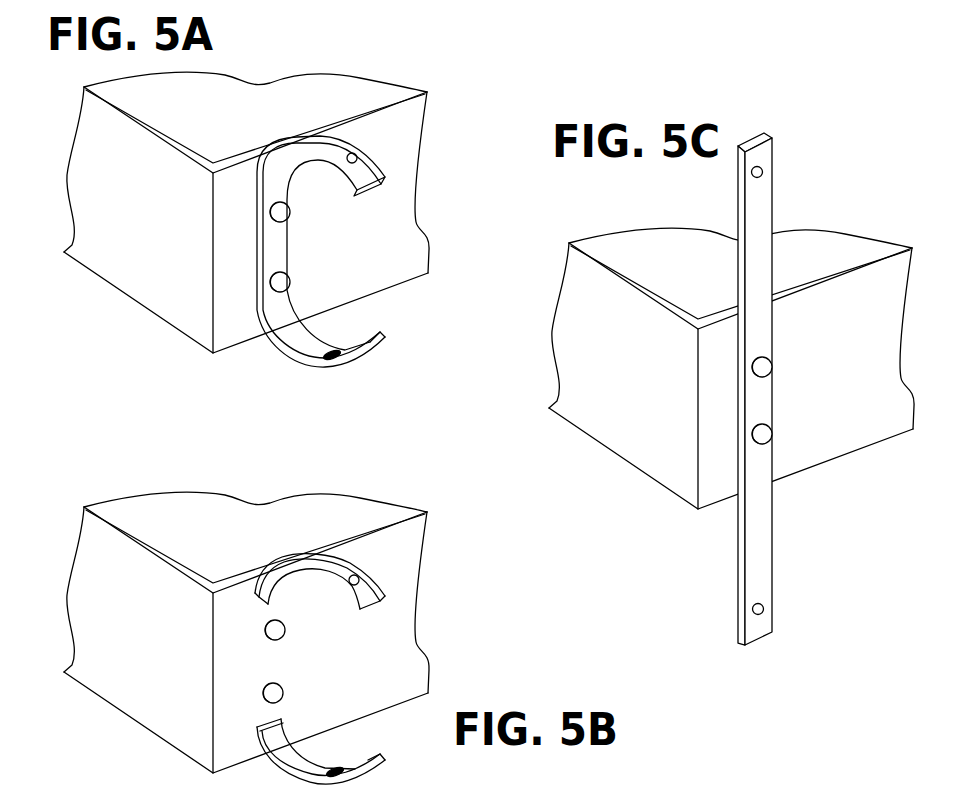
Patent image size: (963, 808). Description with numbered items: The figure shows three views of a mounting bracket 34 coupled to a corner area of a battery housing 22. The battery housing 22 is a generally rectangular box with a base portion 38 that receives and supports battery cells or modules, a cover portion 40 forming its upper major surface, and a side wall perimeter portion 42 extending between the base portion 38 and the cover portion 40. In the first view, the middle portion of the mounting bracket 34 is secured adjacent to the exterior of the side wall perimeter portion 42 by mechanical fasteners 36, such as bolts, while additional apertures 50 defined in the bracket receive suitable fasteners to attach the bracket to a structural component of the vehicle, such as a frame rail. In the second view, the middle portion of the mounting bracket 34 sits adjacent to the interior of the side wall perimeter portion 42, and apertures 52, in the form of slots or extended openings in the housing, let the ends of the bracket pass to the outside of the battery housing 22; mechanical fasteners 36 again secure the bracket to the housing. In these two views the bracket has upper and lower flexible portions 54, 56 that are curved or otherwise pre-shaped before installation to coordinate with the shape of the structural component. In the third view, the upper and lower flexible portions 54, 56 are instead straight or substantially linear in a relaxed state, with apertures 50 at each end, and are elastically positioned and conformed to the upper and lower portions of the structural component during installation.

In FIG. 5A, the battery housing 22 is at (444, 116).
In FIG. 5B, the battery housing 22 is at (401, 496).
In FIG. 5C, the battery housing 22 is at (893, 222).
In FIG. 5A, the mounting bracket 34 is at (293, 362).
In FIG. 5A, the mechanical fasteners 36 is at (283, 213).
In FIG. 5B, the mechanical fasteners 36 is at (280, 632).
In FIG. 5C, the mechanical fasteners 36 is at (763, 368).
In FIG. 5A, the base portion 38 is at (130, 300).
In FIG. 5B, the base portion 38 is at (246, 722).
In FIG. 5C, the base portion 38 is at (731, 464).
In FIG. 5A, the cover portion 40 is at (249, 96).
In FIG. 5B, the cover portion 40 is at (255, 511).
In FIG. 5C, the cover portion 40 is at (740, 249).
In FIG. 5A, the side wall perimeter portion 42 is at (107, 162).
In FIG. 5B, the side wall perimeter portion 42 is at (252, 640).
In FIG. 5C, the side wall perimeter portion 42 is at (727, 376).
In FIG. 5A, the apertures 50 is at (363, 150).
In FIG. 5B, the apertures 50 is at (361, 568).
In FIG. 5C, the apertures 50 is at (763, 172).
In FIG. 5B, the apertures 52 is at (266, 602).
In FIG. 5A, the upper flexible portion 54 is at (368, 167).
In FIG. 5B, the upper flexible portion 54 is at (380, 588).
In FIG. 5C, the upper flexible portion 54 is at (760, 153).
In FIG. 5A, the lower flexible portion 56 is at (343, 365).
In FIG. 5B, the lower flexible portion 56 is at (382, 768).
In FIG. 5C, the lower flexible portion 56 is at (760, 570).